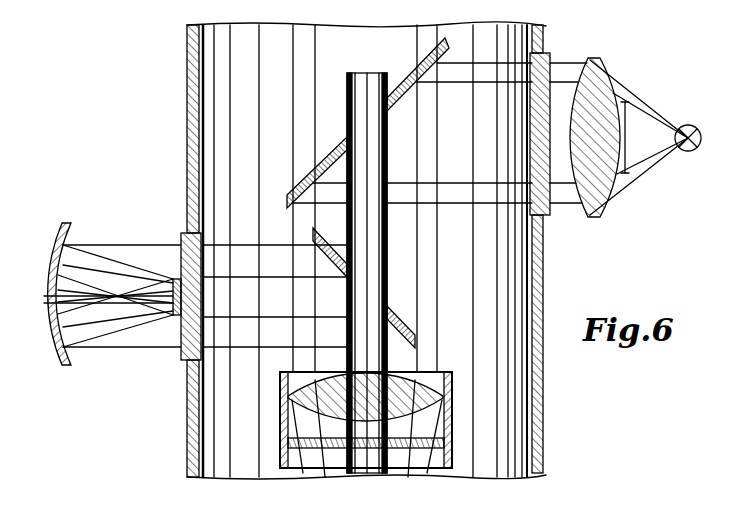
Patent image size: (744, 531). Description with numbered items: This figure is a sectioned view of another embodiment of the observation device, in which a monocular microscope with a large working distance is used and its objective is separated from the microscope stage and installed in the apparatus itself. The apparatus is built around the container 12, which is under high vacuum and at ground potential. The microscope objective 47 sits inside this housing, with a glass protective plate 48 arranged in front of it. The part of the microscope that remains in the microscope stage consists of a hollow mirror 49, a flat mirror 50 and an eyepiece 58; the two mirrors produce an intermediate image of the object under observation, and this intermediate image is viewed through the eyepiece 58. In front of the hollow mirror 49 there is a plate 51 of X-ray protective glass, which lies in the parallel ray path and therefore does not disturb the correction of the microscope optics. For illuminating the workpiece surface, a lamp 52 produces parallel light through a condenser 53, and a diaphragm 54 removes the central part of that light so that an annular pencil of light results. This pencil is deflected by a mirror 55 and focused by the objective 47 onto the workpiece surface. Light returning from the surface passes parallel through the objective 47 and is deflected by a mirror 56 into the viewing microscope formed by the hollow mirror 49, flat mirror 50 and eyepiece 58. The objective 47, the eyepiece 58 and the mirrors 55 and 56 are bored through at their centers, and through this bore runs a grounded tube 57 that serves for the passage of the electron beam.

The container 12 is at (543, 34).
The microscope objective 47 is at (427, 373).
The glass protective plate 48 is at (281, 453).
The hollow mirror 49 is at (70, 232).
The flat mirror 50 is at (175, 278).
The plate of X-ray protective glass 51 is at (207, 248).
The lamp 52 is at (688, 125).
The condenser 53 is at (607, 77).
The diaphragm 54 is at (627, 138).
The mirror 55 is at (403, 80).
The mirror 56 is at (393, 304).
The grounded tube 57 is at (372, 245).
The eyepiece 58 is at (60, 303).